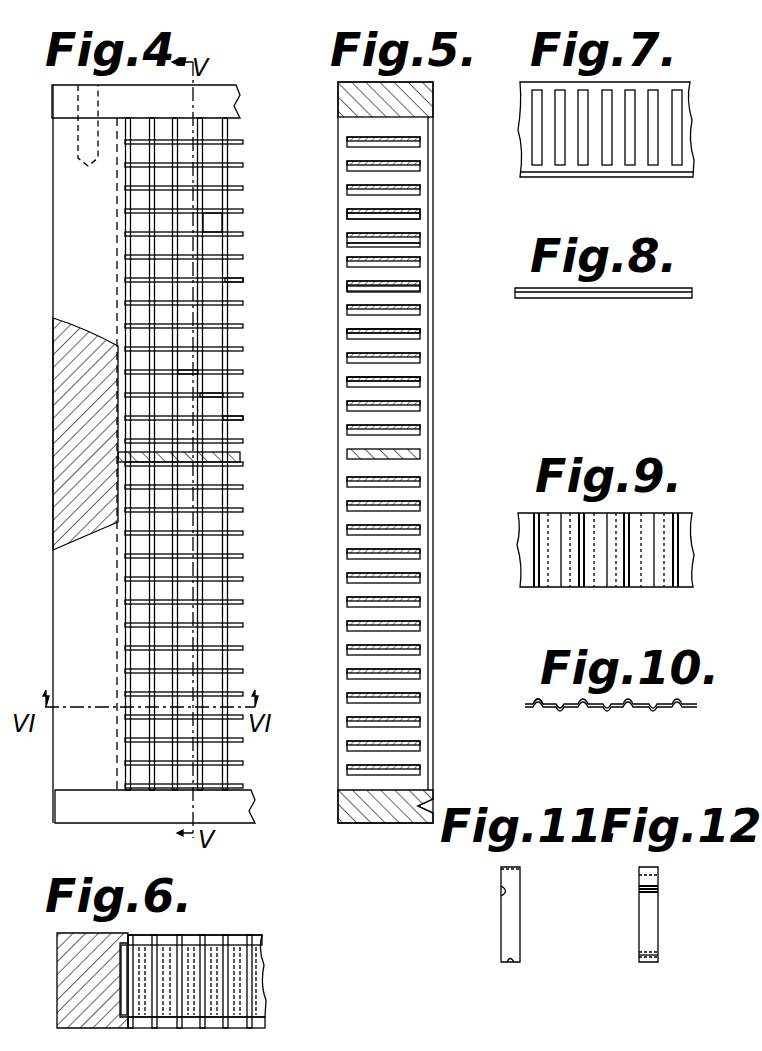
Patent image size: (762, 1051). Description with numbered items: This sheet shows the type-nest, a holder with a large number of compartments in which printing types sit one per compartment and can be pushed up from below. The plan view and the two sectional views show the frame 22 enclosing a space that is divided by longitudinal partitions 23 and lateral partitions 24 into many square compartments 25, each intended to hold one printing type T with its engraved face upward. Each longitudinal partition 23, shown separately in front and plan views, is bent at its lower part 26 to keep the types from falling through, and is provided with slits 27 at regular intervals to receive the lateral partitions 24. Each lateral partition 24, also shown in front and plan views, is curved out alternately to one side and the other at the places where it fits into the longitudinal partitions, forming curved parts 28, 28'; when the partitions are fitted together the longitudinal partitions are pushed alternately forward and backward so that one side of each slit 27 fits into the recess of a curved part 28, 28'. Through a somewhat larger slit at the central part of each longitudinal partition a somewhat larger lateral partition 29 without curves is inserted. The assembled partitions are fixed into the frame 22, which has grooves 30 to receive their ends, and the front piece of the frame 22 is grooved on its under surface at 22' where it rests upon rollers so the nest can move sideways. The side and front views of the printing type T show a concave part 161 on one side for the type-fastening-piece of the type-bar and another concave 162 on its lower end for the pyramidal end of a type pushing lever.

In FIG. 4, the frame 22 is at (153, 454).
In FIG. 5, the frame 22 is at (408, 477).
In FIG. 6, the frame 22 is at (71, 980).
In FIG. 5, the groove on under surface of front piece 22' is at (451, 775).
In FIG. 4, the longitudinal partition 23 is at (228, 153).
In FIG. 5, the longitudinal partition 23 is at (420, 159).
In FIG. 7, the longitudinal partition 23 is at (688, 100).
In FIG. 8, the longitudinal partition 23 is at (640, 292).
In FIG. 6, the longitudinal partition 23 is at (210, 945).
In FIG. 4, the lateral partition 24 is at (222, 190).
In FIG. 5, the lateral partition 24 is at (415, 214).
In FIG. 9, the lateral partition 24 is at (690, 520).
In FIG. 10, the lateral partition 24 is at (640, 708).
In FIG. 6, the lateral partition 24 is at (258, 960).
In FIG. 4, the compartment 25 is at (206, 228).
In FIG. 5, the compartment 25 is at (400, 250).
In FIG. 6, the compartment 25 is at (190, 940).
In FIG. 4, the bent lower part 26 is at (226, 276).
In FIG. 5, the bent lower part 26 is at (428, 292).
In FIG. 7, the bent lower part 26 is at (684, 170).
In FIG. 8, the bent lower part 26 is at (557, 298).
In FIG. 6, the bent lower part 26 is at (258, 1024).
In FIG. 4, the slit 27 is at (180, 372).
In FIG. 5, the slit 27 is at (410, 332).
In FIG. 7, the slit 27 is at (677, 132).
In FIG. 4, the curved part 28 is at (239, 411).
In FIG. 9, the curved part 28 is at (578, 550).
In FIG. 10, the curved part 28 is at (536, 723).
In FIG. 4, the curved part 28' is at (253, 437).
In FIG. 5, the curved part 28' is at (415, 390).
In FIG. 9, the curved part 28' is at (579, 565).
In FIG. 10, the curved part 28' is at (584, 726).
In FIG. 4, the larger lateral partition 29 is at (232, 460).
In FIG. 5, the larger lateral partition 29 is at (405, 447).
In FIG. 4, the groove 30 is at (118, 360).
In FIG. 6, the groove 30 is at (120, 960).
In FIG. 11, the concave part 161 is at (504, 891).
In FIG. 12, the concave part 161 is at (641, 890).
In FIG. 11, the concave 162 is at (511, 960).
In FIG. 12, the concave 162 is at (650, 962).
In FIG. 11, the printing type T is at (510, 925).
In FIG. 12, the printing type T is at (648, 925).